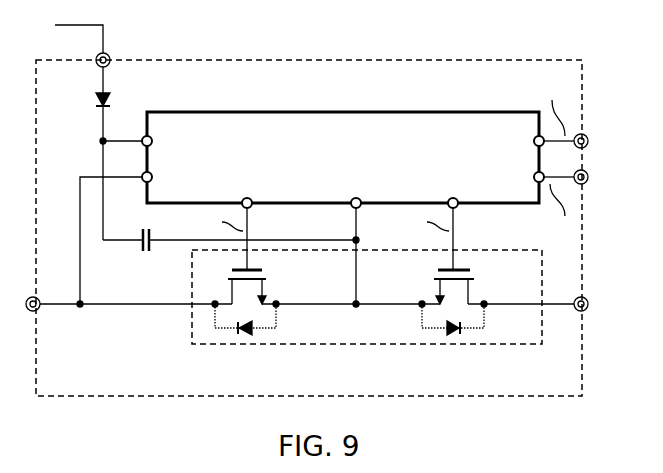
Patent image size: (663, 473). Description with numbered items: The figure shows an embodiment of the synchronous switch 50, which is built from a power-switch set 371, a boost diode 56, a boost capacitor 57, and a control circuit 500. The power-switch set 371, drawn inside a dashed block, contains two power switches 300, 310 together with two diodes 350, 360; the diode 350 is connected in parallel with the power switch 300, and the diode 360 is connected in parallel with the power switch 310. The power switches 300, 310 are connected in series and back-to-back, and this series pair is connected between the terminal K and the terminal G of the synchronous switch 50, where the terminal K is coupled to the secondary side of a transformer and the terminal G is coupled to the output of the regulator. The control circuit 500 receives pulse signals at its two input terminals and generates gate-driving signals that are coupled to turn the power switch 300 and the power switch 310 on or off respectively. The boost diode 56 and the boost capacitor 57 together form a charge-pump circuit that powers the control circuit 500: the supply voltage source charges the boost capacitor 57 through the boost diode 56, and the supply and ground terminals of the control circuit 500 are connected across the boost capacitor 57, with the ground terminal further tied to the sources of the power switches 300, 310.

The synchronous switch 50 is at (635, 38).
The boost diode 56 is at (113, 101).
The boost capacitor 57 is at (147, 254).
The control circuit 500 is at (472, 108).
The power switch 300 is at (270, 287).
The power switch 310 is at (477, 287).
The diode 350 is at (245, 340).
The diode 360 is at (455, 340).
The power-switch set 371 is at (367, 297).